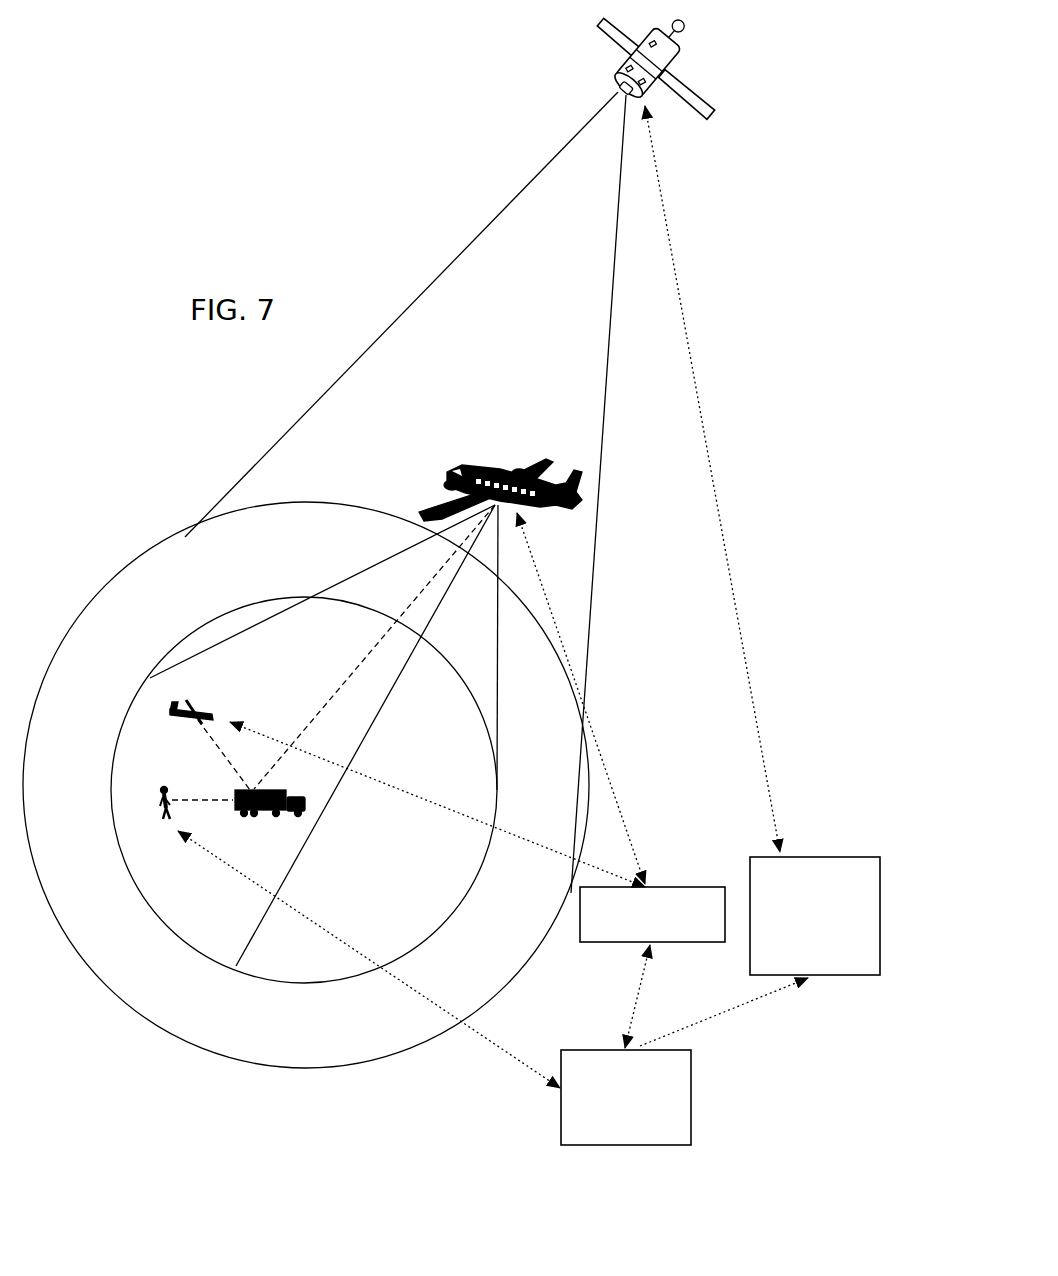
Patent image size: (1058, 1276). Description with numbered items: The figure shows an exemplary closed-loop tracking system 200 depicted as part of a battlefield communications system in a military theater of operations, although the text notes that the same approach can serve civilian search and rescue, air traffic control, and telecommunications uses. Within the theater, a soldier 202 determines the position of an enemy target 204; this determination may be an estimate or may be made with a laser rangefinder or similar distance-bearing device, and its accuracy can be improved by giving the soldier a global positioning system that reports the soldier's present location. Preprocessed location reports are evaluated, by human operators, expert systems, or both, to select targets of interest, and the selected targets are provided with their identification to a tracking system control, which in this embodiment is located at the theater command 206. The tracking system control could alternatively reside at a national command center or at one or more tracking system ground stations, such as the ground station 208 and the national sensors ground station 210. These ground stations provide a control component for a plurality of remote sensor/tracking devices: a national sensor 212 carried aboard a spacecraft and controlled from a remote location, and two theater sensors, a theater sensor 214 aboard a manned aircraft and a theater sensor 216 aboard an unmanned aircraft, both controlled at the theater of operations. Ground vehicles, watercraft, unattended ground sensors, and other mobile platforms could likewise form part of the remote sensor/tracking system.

The closed-loop tracking system 200 is at (782, 286).
The soldier 202 is at (178, 770).
The enemy target 204 is at (270, 790).
The theater command 206 is at (665, 1049).
The tracking system ground station 208 is at (668, 886).
The national sensors ground station 210 is at (815, 855).
The national sensor 212 is at (700, 112).
The theater sensor 214 is at (480, 406).
The theater sensor 216 is at (188, 709).